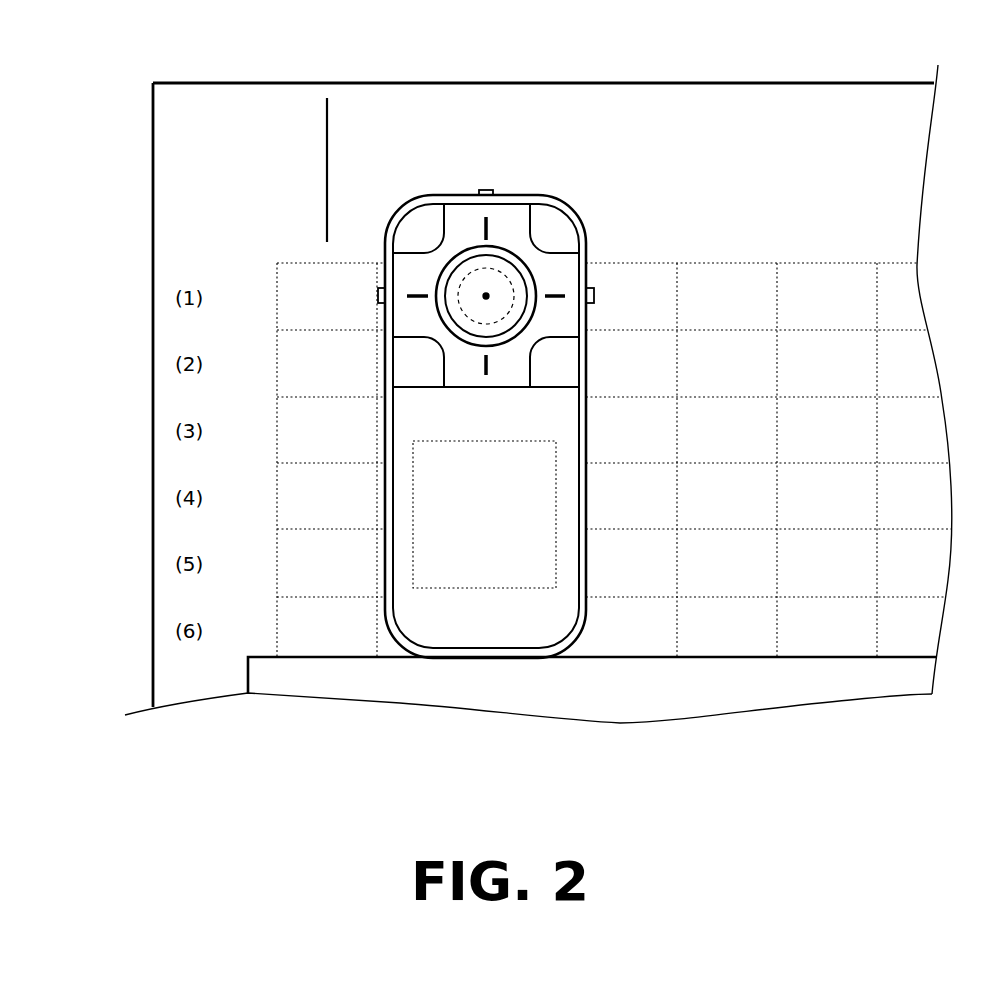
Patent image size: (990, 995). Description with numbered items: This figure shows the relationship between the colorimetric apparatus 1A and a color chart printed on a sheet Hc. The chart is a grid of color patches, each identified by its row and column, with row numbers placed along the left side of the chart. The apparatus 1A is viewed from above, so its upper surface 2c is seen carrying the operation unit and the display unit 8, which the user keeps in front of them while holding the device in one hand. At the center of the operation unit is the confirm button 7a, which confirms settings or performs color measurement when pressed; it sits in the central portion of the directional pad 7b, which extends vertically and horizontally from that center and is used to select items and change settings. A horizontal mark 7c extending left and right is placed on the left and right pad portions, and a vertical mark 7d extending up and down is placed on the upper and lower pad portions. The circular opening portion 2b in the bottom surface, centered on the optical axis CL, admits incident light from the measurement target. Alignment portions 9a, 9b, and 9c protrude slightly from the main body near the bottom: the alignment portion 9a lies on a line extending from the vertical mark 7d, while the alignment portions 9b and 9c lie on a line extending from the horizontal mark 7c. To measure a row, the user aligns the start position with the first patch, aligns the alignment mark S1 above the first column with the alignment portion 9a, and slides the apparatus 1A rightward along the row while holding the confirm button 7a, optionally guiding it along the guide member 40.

The colorimetric apparatus 1A is at (468, 385).
The opening portion 2b is at (437, 272).
The upper surface 2c is at (563, 608).
The confirm button 7a is at (468, 262).
The directional pad 7b is at (551, 240).
The horizontal mark 7c is at (558, 290).
The vertical mark 7d is at (482, 226).
The display unit 8 is at (413, 528).
The alignment portion 9a is at (488, 190).
The alignment portion 9b is at (596, 297).
The alignment portion 9c is at (378, 296).
The guide member 40 is at (623, 697).
The optical axis CL is at (489, 298).
The direction / detection range D is at (727, 229).
The sheet Hc is at (820, 83).
The alignment mark S1 is at (322, 128).